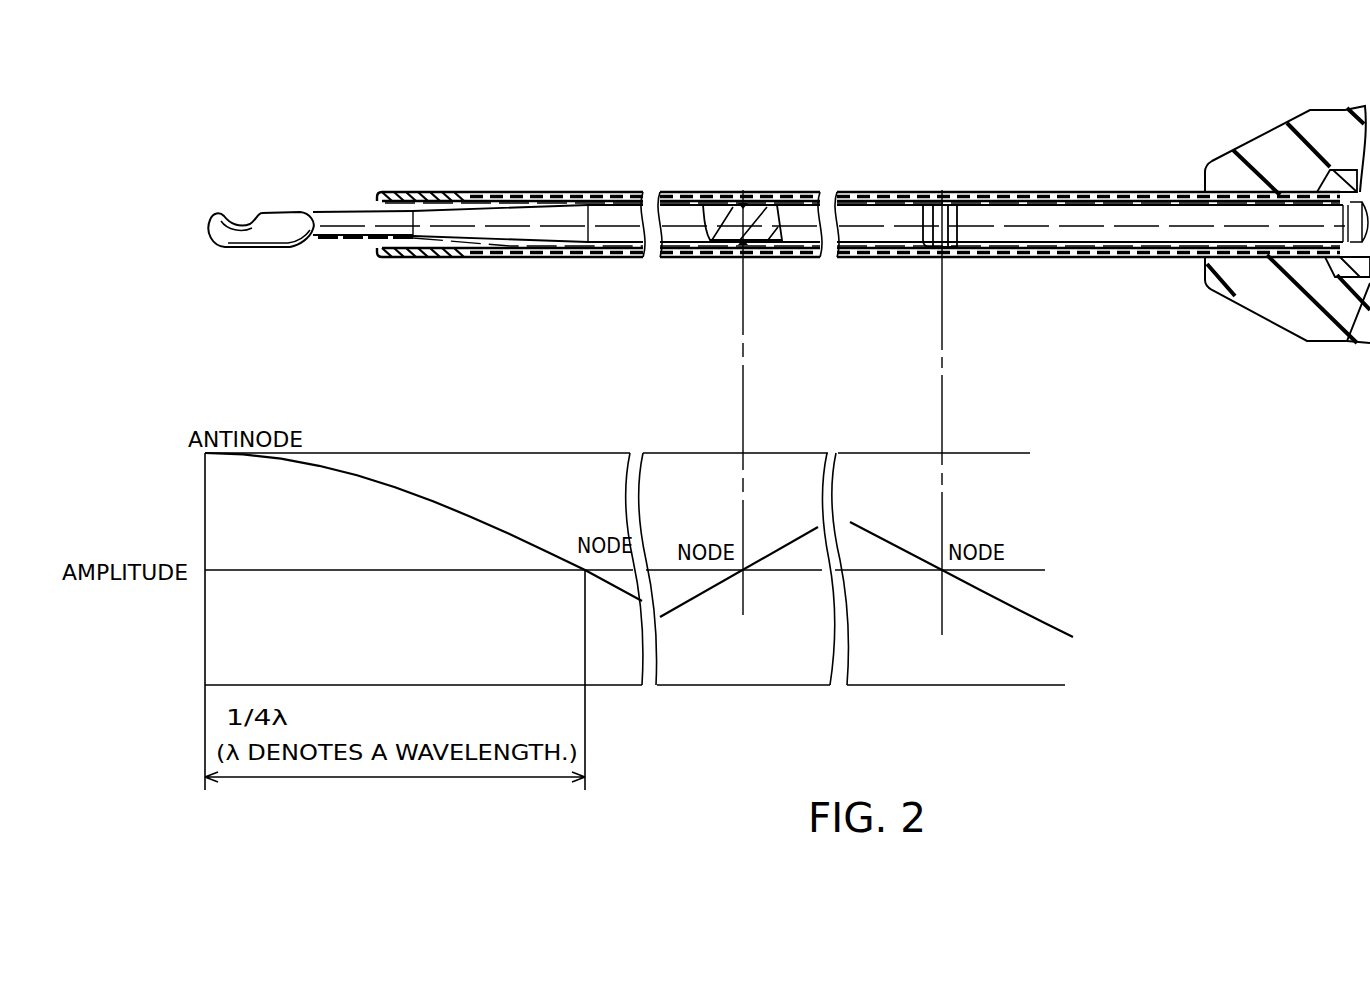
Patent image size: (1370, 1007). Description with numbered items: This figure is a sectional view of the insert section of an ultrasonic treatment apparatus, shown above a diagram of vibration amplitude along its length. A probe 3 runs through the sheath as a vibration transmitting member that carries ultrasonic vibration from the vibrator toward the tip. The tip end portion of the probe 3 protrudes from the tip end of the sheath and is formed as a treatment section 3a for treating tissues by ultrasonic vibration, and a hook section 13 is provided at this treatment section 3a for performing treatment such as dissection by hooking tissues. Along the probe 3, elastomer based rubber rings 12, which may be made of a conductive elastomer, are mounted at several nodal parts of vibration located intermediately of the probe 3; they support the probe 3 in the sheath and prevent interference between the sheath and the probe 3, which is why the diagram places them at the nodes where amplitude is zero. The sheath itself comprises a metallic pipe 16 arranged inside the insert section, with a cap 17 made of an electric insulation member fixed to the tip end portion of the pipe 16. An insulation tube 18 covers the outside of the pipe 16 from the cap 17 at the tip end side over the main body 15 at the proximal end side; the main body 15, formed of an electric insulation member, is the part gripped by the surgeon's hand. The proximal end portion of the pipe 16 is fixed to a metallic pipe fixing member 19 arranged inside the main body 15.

The probe 3 is at (1027, 213).
The treatment section 3a is at (290, 210).
The rubber rings 12 is at (927, 195).
The hook section 13 is at (225, 208).
The main body 15 is at (1327, 328).
The pipe 16 is at (555, 190).
The cap 17 is at (381, 259).
The insulation tube 18 is at (423, 190).
The pipe fixing member 19 is at (1343, 187).